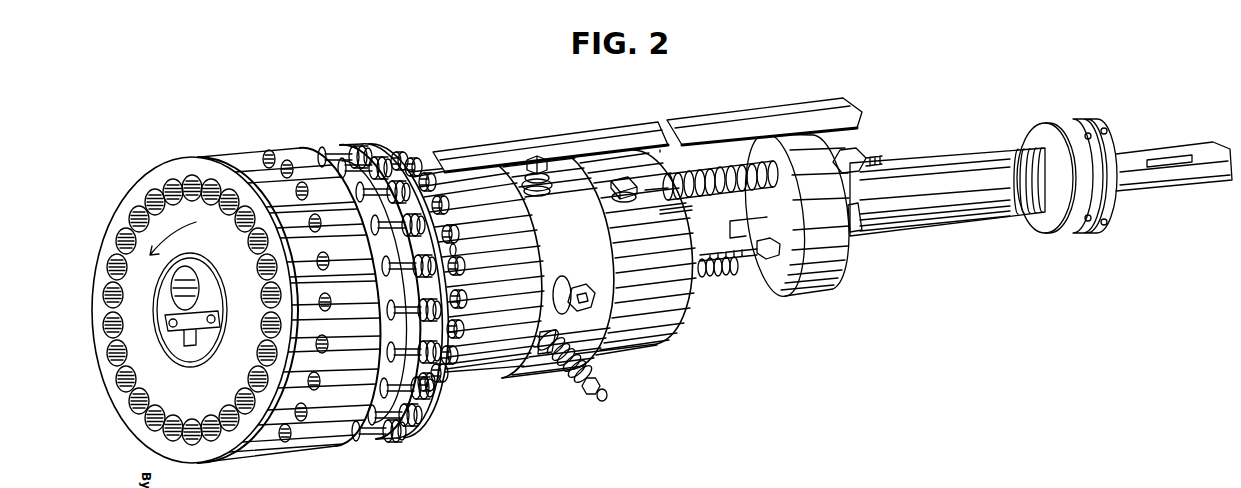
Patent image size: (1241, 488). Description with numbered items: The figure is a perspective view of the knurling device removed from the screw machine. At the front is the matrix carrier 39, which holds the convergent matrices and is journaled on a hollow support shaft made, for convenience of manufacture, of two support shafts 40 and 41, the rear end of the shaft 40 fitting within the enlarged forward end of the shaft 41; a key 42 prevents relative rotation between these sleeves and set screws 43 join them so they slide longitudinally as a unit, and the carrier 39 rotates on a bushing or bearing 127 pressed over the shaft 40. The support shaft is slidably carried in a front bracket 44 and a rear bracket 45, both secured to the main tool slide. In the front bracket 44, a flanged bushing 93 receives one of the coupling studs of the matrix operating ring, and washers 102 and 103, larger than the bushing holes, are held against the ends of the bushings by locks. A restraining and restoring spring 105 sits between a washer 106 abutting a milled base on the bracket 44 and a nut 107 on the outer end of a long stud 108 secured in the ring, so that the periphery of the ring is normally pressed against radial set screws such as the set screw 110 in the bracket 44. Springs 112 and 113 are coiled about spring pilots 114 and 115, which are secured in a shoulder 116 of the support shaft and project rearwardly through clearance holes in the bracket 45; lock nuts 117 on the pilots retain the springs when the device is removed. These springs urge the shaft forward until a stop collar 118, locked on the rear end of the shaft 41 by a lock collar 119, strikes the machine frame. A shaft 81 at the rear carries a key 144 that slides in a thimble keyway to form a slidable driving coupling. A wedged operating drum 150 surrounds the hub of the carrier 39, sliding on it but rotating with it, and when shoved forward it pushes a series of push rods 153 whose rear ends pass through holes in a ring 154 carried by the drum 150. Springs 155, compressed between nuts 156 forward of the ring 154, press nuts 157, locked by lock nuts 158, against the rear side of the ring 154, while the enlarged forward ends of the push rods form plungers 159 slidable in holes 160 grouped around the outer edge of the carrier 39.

The matrix carrier 39 is at (162, 172).
The support shaft 40 is at (205, 283).
The support shaft 41 is at (666, 328).
The key 42 is at (746, 118).
The set screws 43 is at (626, 178).
The bracket 44 is at (598, 338).
The bracket 45 is at (840, 258).
The shaft 81 is at (1158, 190).
The flanged bushing 93 is at (535, 207).
The washer 102 is at (520, 153).
The washer 103 is at (560, 175).
The restraining and restoring spring 105 is at (600, 374).
The washer 106 is at (532, 370).
The nut 107 is at (580, 396).
The long stud 108 is at (606, 396).
The set screw 110 is at (582, 292).
The spring 112 is at (728, 168).
The spring 113 is at (712, 284).
The spring pilot 114 is at (700, 203).
The spring pilot 115 is at (736, 272).
The shoulder 116 is at (698, 310).
The lock nuts 117 is at (858, 156).
The stop collar 118 is at (1030, 142).
The lock collar 119 is at (1103, 203).
The bushing or bearing 127 is at (193, 362).
The key 144 is at (1195, 150).
The wedged operating drum 150 is at (480, 374).
The push rods 153 is at (380, 273).
The ring 154 is at (352, 146).
The springs 155 is at (390, 410).
The nuts 156 is at (360, 433).
The nuts 157 is at (455, 236).
The lock nuts 158 is at (462, 250).
The plungers 159 is at (370, 252).
The holes 160 is at (110, 258).